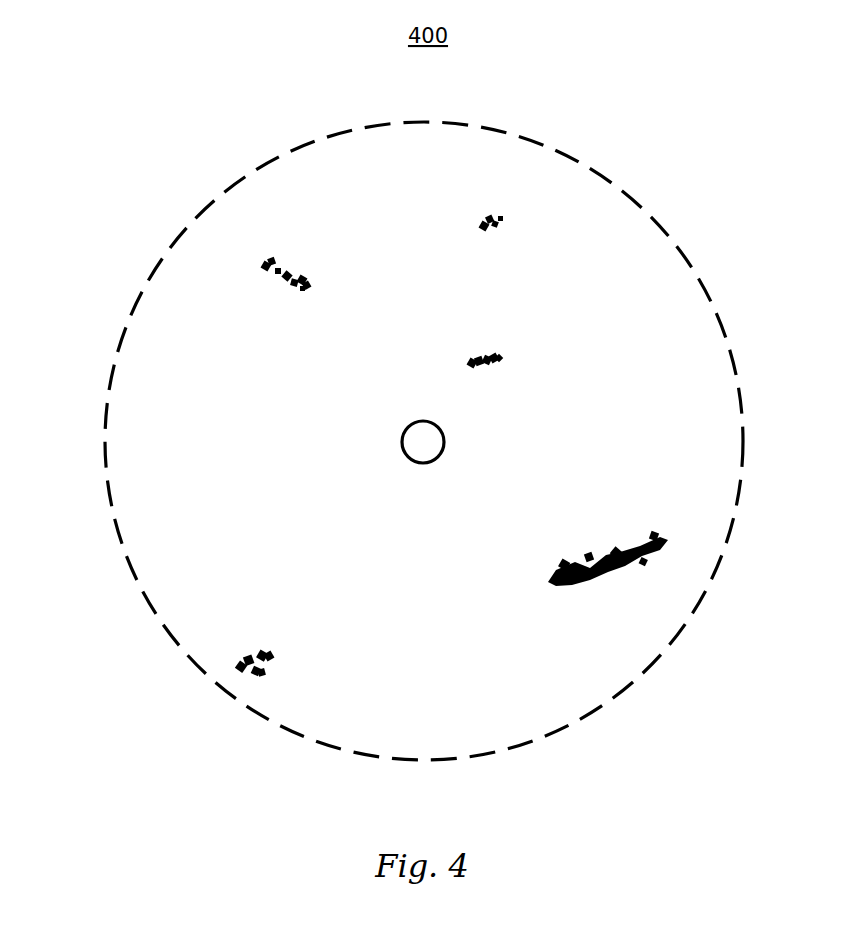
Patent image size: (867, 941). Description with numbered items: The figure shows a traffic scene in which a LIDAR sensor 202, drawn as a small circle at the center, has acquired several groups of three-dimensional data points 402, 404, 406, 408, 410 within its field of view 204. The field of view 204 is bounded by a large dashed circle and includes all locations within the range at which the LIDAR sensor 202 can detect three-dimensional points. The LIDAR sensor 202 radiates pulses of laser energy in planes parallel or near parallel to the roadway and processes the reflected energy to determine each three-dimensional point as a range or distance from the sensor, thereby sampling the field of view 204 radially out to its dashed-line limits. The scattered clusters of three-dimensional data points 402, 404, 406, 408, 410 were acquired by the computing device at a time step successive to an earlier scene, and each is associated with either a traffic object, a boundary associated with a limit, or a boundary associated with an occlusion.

The LIDAR sensor 202 is at (402, 442).
The field of view 204 is at (105, 440).
The 3D data points 402 is at (312, 283).
The 3D data points 404 is at (487, 225).
The 3D data points 406 is at (500, 360).
The 3D data points 408 is at (548, 580).
The 3D data points 410 is at (270, 655).